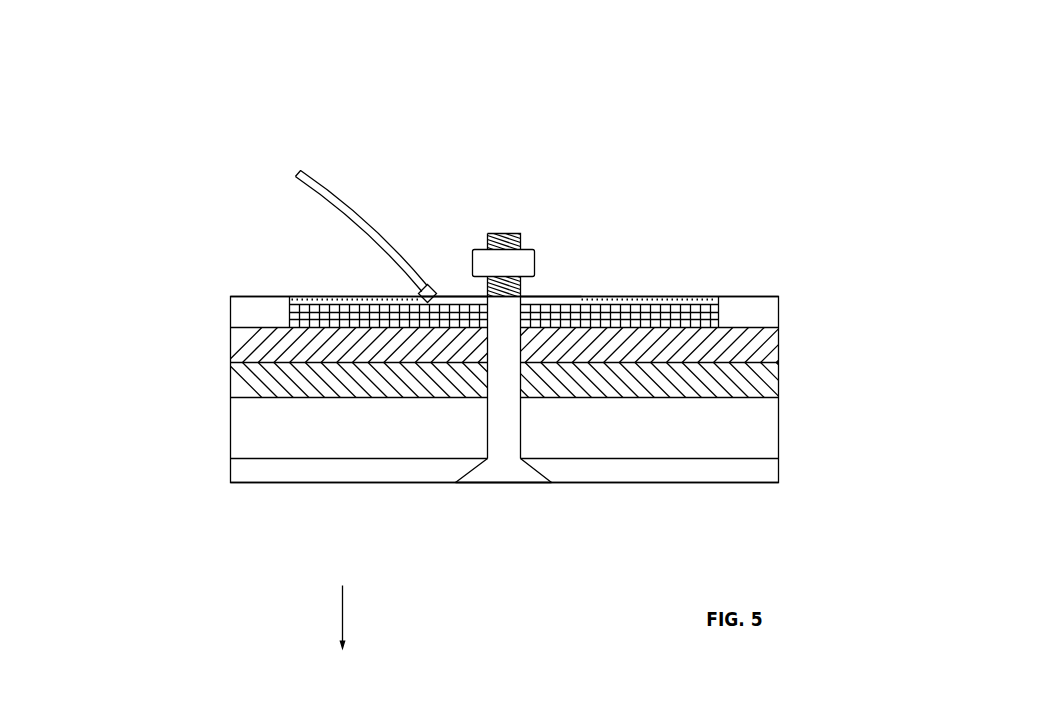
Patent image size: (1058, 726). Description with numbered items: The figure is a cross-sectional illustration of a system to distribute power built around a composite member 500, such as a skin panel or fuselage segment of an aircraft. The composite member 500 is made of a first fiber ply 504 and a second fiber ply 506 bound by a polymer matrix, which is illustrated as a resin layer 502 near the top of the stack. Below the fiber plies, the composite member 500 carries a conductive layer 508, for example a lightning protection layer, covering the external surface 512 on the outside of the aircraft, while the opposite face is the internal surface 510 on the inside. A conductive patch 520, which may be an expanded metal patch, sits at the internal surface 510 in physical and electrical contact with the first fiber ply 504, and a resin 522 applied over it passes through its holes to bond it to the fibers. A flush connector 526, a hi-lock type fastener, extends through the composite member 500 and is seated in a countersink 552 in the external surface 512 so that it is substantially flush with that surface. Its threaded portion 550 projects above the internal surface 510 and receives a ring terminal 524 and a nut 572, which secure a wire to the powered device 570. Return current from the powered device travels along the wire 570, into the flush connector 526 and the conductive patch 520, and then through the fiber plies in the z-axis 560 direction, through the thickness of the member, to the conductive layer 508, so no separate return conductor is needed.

The composite member 500 is at (413, 288).
The resin layer 502 is at (420, 268).
The first fiber ply 504 is at (411, 328).
The second fiber ply 506 is at (409, 394).
The conductive layer 508 is at (436, 504).
The internal surface 510 is at (548, 279).
The external surface 512 is at (533, 512).
The conductive patch 520 is at (552, 229).
The resin 522 is at (491, 268).
The ring terminal 524 is at (537, 249).
The flush connector 526 is at (547, 454).
The threaded portion 550 is at (588, 196).
The countersink 552 is at (473, 530).
The z-axis 560 is at (316, 616).
The wire to powered device 570 is at (375, 156).
The nut 572 is at (498, 211).